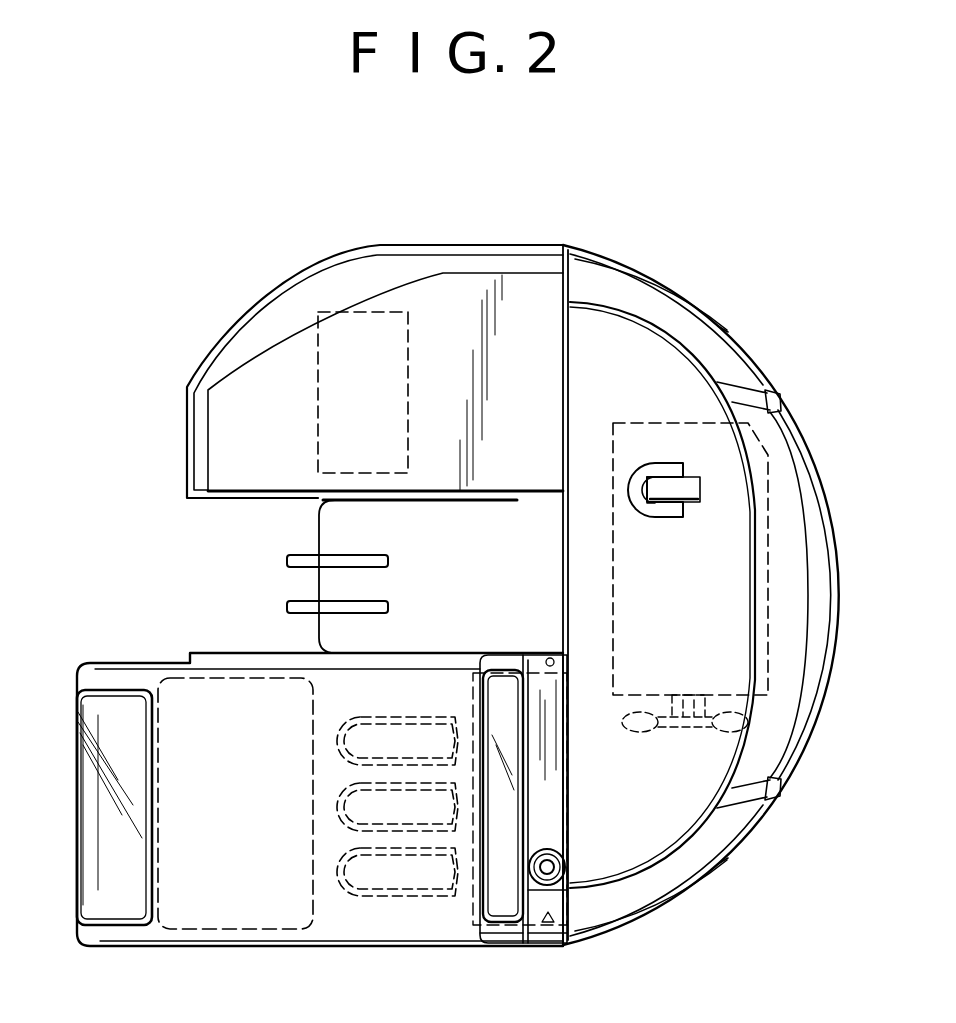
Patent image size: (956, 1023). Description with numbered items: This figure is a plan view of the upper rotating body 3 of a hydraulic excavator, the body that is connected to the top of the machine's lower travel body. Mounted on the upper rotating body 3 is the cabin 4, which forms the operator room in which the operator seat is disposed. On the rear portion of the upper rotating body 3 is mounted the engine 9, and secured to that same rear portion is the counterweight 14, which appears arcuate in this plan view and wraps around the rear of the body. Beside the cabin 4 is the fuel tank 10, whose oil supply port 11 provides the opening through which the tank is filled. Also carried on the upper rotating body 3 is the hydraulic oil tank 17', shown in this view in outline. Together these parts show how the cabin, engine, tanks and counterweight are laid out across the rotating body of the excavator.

The upper rotating body 3 is at (158, 500).
The cabin 4 is at (80, 662).
The engine 9 is at (775, 577).
The fuel tank 10 is at (543, 845).
The oil supply port 11 is at (549, 886).
The counterweight 14 is at (763, 830).
The hydraulic oil tank 17' is at (395, 337).